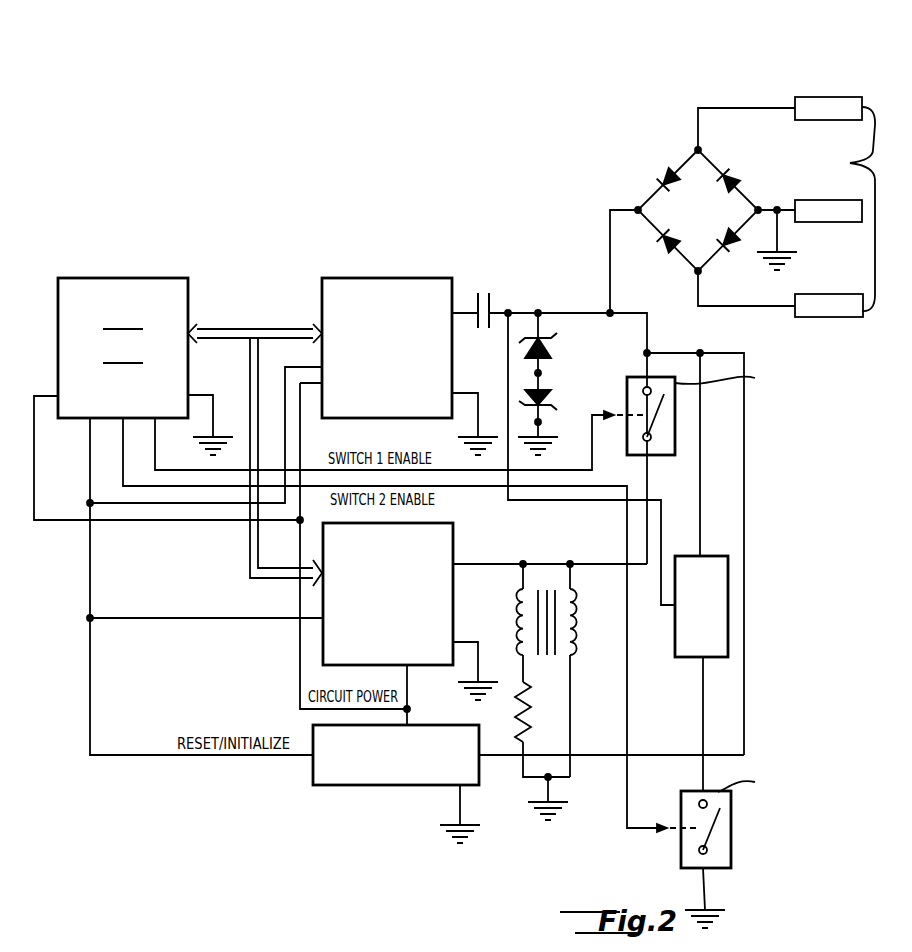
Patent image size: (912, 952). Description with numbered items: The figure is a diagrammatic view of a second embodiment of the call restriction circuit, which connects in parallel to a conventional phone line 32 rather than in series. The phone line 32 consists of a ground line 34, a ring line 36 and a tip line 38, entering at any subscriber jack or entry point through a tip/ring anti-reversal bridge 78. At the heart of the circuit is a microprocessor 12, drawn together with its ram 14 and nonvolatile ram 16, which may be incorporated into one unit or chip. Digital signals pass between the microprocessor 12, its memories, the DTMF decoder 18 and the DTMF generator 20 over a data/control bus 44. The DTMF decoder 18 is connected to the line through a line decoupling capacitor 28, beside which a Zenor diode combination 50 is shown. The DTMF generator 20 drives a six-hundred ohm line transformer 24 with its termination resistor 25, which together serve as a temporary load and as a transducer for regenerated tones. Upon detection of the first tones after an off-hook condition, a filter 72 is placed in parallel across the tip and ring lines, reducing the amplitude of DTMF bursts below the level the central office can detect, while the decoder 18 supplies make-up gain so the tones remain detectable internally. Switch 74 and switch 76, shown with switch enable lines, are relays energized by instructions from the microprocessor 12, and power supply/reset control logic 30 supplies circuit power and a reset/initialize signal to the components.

The microprocessor 12 is at (139, 297).
The ram 14 is at (112, 350).
The nonvolatile ram 16 is at (78, 397).
The DTMF decoder 18 is at (404, 278).
The DTMF generator 20 is at (452, 540).
The line transformer 24 is at (582, 632).
The termination resistor 25 is at (532, 705).
The line decoupling capacitor 28 is at (489, 266).
The power supply/reset control logic 30 is at (357, 785).
The phone line 32 is at (850, 163).
The ground line 34 is at (779, 208).
The ring line 36 is at (775, 306).
The tip line 38 is at (753, 108).
The data/control bus 44 is at (306, 326).
The Zenor diode combination 50 is at (558, 352).
The filter 72 is at (728, 578).
The switch 74 is at (795, 368).
The switch 76 is at (797, 772).
The tip/ring anti-reversal bridge 78 is at (645, 193).